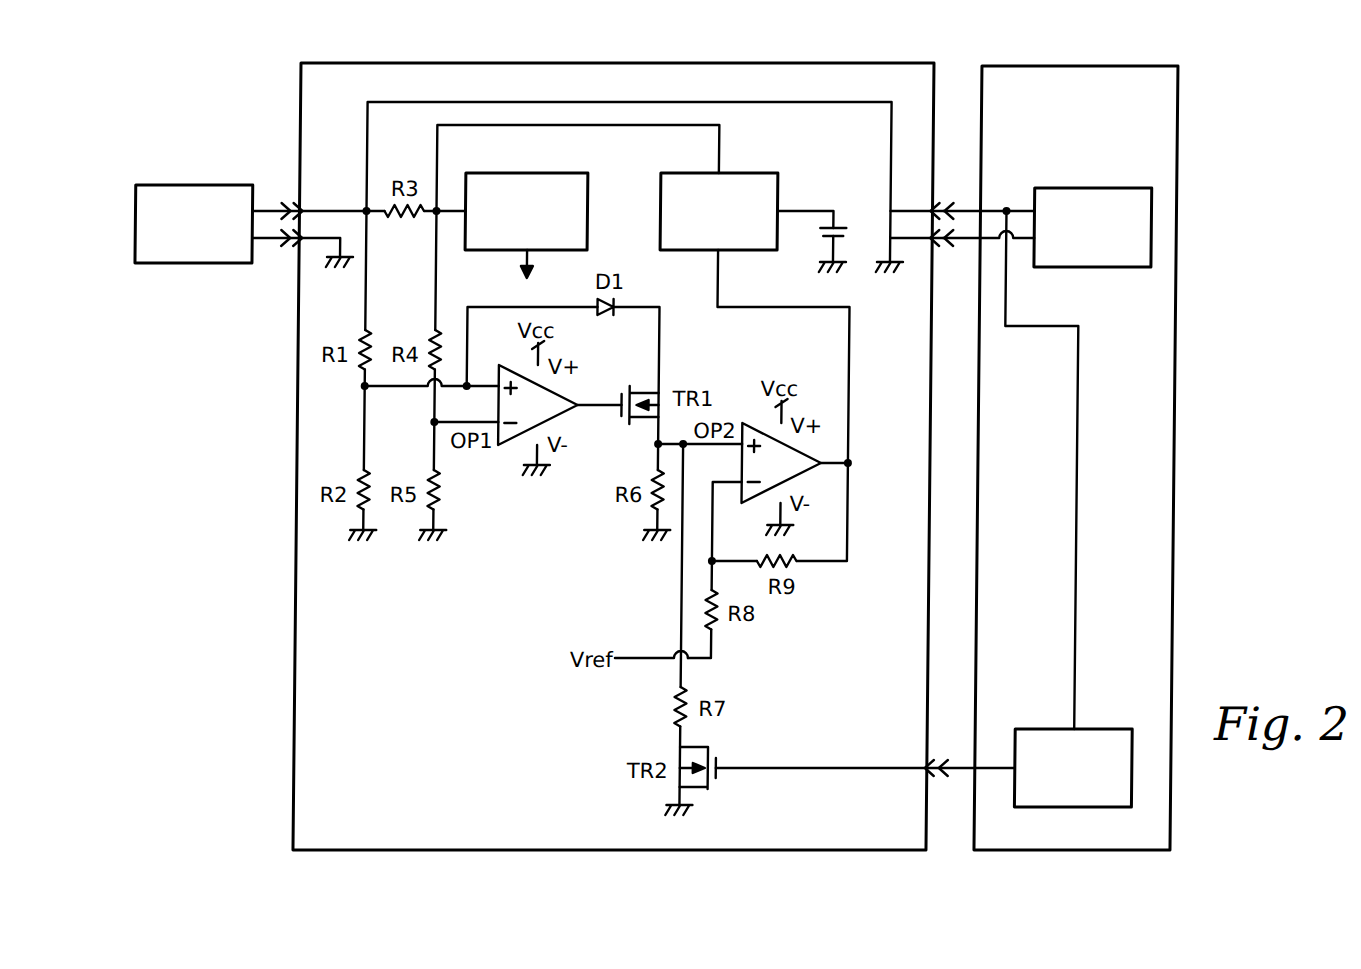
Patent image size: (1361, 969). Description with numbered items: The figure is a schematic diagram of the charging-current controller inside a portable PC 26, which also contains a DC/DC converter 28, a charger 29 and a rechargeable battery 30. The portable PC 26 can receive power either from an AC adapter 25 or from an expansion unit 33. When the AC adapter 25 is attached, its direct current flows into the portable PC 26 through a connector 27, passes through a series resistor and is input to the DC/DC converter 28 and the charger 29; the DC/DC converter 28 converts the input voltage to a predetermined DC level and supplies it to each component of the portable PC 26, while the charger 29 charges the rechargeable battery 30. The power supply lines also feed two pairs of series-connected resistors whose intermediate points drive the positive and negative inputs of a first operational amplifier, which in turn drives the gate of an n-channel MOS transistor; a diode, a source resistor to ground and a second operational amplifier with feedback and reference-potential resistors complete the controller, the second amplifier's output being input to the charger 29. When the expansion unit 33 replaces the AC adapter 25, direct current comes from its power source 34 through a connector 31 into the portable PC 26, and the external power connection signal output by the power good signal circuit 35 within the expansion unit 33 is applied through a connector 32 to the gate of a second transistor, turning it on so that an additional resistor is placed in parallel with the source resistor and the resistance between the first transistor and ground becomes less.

The AC adapter 25 is at (168, 156).
The portable PC 26 is at (905, 63).
The connector 27 is at (307, 208).
The DC/DC converter 28 is at (500, 150).
The charger 29 is at (753, 173).
The rechargeable battery 30 is at (846, 236).
The connector 31 is at (929, 203).
The connector 32 is at (923, 773).
The expansion unit 33 is at (1178, 84).
The power source 34 is at (1125, 188).
The power good signal (PGS) circuit 35 is at (1107, 729).